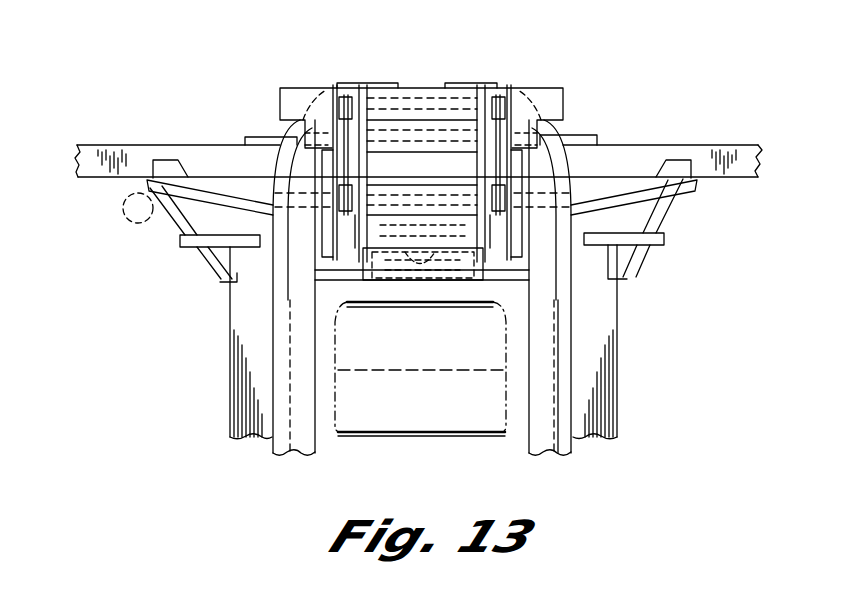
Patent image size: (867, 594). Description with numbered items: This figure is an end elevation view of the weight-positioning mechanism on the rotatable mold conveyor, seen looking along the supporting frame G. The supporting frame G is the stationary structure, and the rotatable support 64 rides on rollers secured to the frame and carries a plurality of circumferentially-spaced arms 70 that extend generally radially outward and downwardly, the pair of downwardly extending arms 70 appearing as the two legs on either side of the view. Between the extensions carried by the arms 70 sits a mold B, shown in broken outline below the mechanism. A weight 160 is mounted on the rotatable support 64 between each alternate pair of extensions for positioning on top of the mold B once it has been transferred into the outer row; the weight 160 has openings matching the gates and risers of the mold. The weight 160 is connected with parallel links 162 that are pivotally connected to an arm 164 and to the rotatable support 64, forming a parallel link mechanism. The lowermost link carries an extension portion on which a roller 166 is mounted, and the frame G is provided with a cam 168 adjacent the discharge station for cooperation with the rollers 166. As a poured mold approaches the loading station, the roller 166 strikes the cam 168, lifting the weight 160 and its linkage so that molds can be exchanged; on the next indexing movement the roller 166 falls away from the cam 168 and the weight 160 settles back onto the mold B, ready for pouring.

The supporting frame G is at (100, 143).
The rotatable support 64 is at (292, 88).
The parallel links 162 is at (320, 84).
The arm 164 is at (478, 165).
The roller 166 is at (122, 216).
The cam 168 is at (198, 190).
The weight 160 is at (464, 284).
The arms 70 is at (310, 452).
The mold B is at (434, 350).